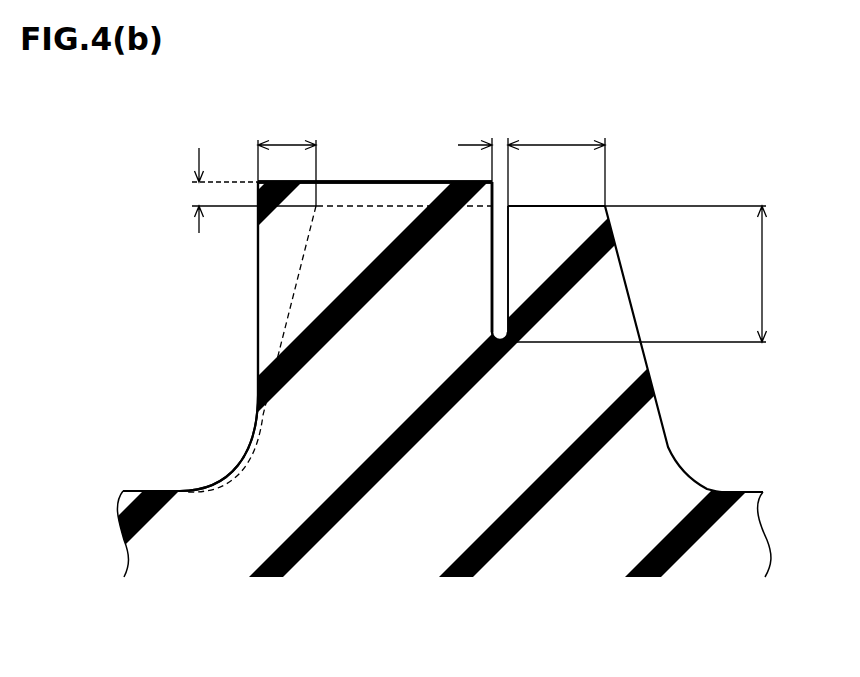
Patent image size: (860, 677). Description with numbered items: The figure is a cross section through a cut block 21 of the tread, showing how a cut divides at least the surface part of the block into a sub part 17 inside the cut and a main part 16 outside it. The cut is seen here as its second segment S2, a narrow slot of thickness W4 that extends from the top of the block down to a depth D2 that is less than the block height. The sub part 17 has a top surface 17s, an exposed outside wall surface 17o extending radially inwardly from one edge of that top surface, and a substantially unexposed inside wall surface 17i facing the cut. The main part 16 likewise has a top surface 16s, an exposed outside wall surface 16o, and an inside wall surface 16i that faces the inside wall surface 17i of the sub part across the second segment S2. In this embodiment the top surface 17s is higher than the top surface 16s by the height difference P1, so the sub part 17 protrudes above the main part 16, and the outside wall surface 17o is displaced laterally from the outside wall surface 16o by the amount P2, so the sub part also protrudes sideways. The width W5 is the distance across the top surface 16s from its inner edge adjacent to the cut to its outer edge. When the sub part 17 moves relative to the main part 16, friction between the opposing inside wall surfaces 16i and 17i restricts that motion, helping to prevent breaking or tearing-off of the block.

The main part 16 is at (573, 307).
The sub part 17 is at (403, 309).
The cut block 21 is at (612, 621).
The top surface of the main part 16s is at (378, 204).
The inside wall surface of the main part 16i is at (506, 250).
The outside wall surface of the main part 16o is at (299, 265).
The top surface of the sub part 17s is at (337, 179).
The inside wall surface of the sub part 17i is at (494, 298).
The outside wall surface of the sub part 17o is at (257, 324).
The second segment S2 is at (496, 292).
The amount of displacement (height difference) P1 is at (239, 190).
The amount of displacement P2 is at (287, 162).
The thickness of the cut segments W4 is at (488, 162).
The width of the top surface of the main part W5 is at (556, 162).
The depth of the cut segments D2 is at (645, 274).